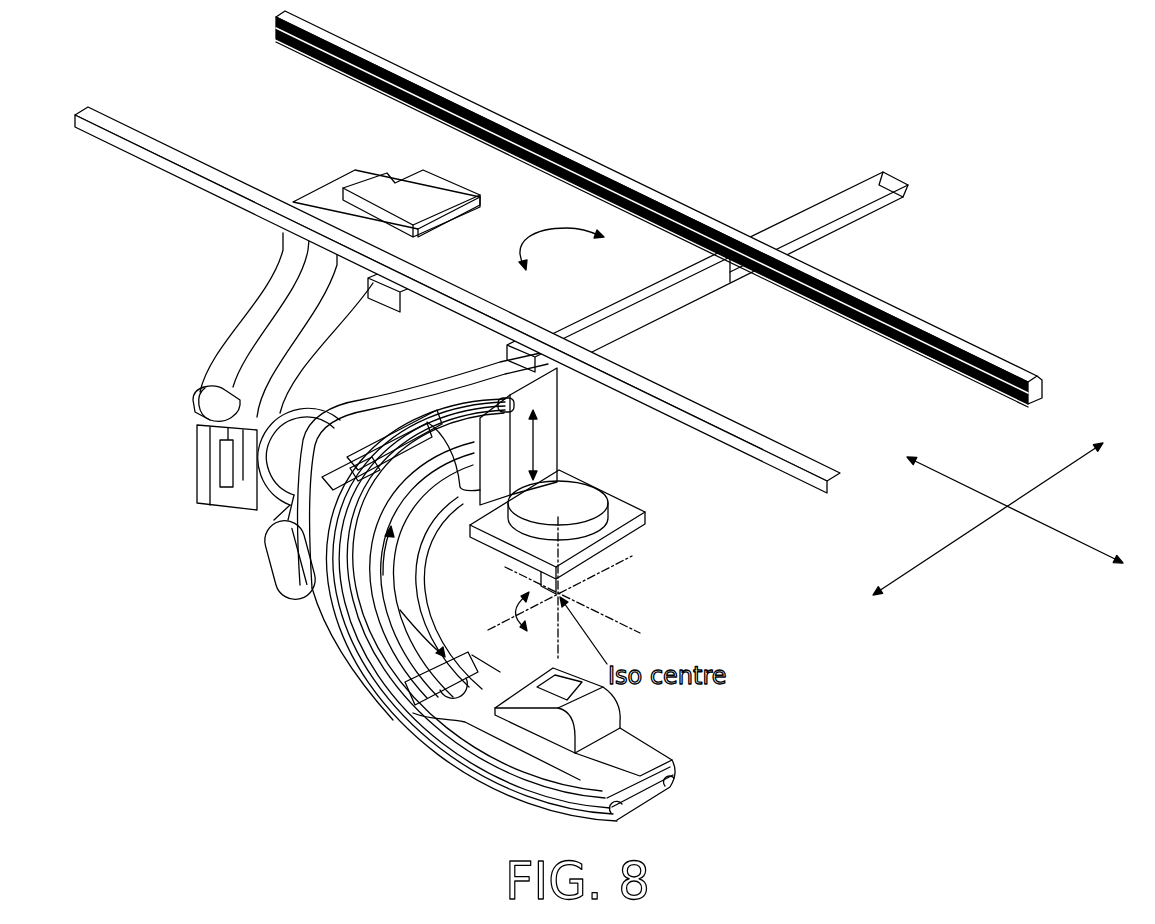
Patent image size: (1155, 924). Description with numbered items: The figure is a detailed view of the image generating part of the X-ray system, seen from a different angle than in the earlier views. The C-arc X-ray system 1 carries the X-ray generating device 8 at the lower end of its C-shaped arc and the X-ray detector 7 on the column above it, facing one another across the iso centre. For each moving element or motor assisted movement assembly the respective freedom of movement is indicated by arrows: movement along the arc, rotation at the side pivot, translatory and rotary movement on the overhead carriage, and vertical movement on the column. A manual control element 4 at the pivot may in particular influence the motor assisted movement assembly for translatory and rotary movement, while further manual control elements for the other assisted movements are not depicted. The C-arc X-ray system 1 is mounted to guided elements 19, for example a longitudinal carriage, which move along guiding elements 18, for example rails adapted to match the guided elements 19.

The C-arc X-ray system 1 is at (247, 622).
The manual control element 4 is at (213, 457).
The X-ray detector 7 is at (652, 528).
The X-ray generating device 8 is at (627, 757).
The guiding elements 18 is at (893, 350).
The guided elements 19 is at (400, 320).